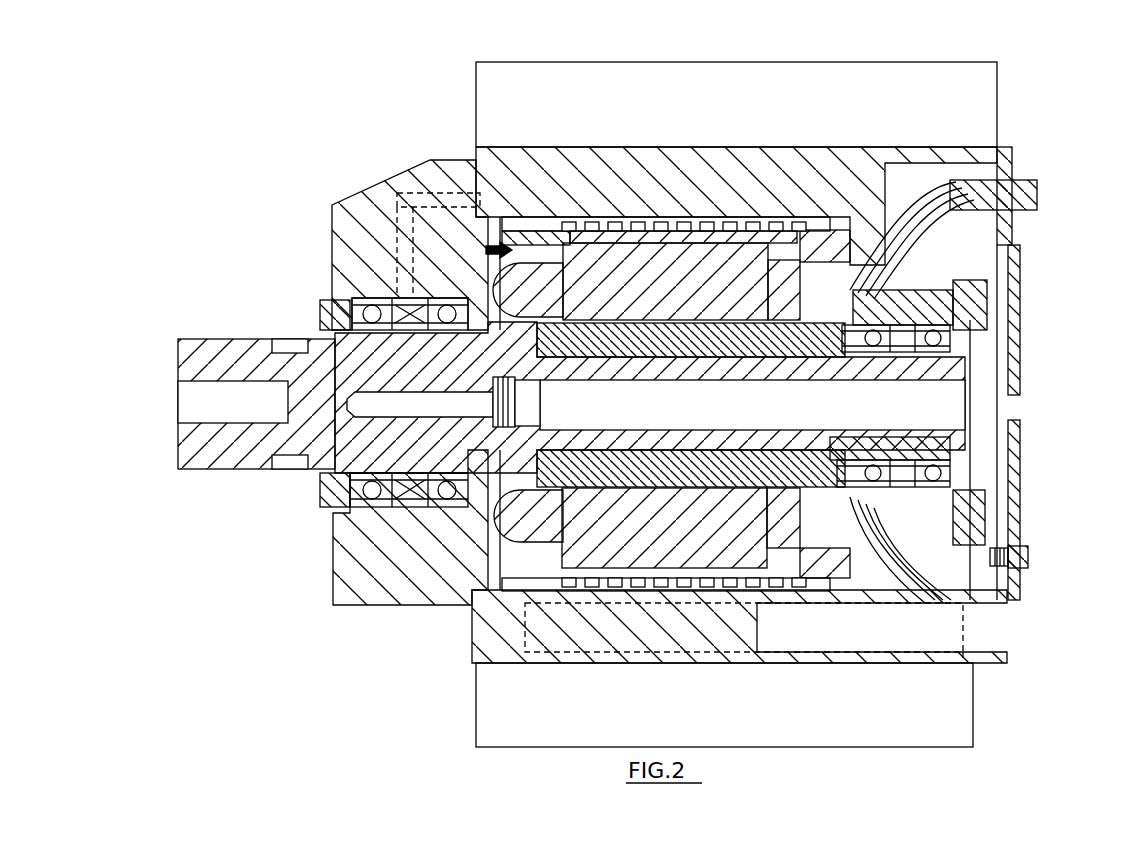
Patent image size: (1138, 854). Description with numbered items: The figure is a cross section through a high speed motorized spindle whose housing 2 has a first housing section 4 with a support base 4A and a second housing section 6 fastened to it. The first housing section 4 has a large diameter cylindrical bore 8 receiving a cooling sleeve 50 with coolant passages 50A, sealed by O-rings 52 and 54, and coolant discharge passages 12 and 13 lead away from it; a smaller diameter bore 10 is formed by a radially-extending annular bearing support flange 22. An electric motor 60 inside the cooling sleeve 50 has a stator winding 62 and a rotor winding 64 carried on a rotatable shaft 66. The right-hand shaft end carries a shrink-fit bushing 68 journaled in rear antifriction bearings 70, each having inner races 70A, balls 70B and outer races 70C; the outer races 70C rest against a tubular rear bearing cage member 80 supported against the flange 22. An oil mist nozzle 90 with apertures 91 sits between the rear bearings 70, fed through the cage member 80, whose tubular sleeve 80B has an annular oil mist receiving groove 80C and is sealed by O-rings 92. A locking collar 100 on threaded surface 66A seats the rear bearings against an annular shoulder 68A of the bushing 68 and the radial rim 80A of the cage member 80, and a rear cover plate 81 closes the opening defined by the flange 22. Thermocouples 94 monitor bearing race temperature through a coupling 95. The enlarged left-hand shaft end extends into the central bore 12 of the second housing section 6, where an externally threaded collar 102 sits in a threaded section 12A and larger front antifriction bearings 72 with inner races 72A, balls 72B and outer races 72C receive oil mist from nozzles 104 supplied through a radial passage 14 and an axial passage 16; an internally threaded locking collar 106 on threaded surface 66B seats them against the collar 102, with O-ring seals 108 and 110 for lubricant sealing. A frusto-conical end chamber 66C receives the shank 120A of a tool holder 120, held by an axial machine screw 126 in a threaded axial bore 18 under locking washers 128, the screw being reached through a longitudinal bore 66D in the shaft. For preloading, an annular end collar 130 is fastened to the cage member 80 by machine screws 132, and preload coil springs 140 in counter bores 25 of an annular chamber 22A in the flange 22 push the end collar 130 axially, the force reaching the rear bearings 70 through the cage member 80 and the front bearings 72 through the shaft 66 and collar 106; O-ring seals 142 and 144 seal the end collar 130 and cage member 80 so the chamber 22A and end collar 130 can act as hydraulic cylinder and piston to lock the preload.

The housing 2 is at (428, 148).
The first housing section 4 is at (480, 640).
The support base 4A is at (614, 78).
The second housing section 6 is at (385, 198).
The large diameter cylindrical bore 8 is at (560, 217).
The smaller diameter cylindrical bore 10 is at (830, 498).
The central bore 12 is at (405, 510).
The threaded section 12A is at (480, 300).
The coolant discharge passage 13 is at (849, 640).
The radial passage 14 is at (490, 252).
The axial passage 16 is at (474, 160).
The threaded axial bore 18 is at (348, 356).
The annular bearing support flange 22 is at (1017, 592).
The annular chamber 22A is at (1012, 232).
The counter bores 25 is at (933, 290).
The cooling sleeve 50 is at (605, 233).
The coolant passages 50A is at (673, 217).
The O-ring 52 is at (515, 217).
The O-ring 54 is at (800, 194).
The electric motor 60 is at (402, 246).
The stator winding 62 is at (515, 583).
The rotor winding 64 is at (642, 347).
The rotatable shaft 66 is at (637, 450).
The threaded surface 66A is at (1037, 341).
The threaded surface 66B is at (322, 344).
The frusto-conical end chamber 66C is at (344, 452).
The longitudinal bore 66D is at (643, 430).
The shrink-fit bushing 68 is at (962, 386).
The annular shoulder 68A is at (840, 388).
The rear antifriction bearings 70 is at (876, 440).
The inner races 70A is at (834, 370).
The balls 70B is at (790, 346).
The outer races 70C is at (790, 477).
The front antifriction bearings 72 is at (362, 290).
The inner races 72A is at (438, 447).
The balls 72B is at (470, 482).
The outer races 72C is at (332, 516).
The rear bearing cage member 80 is at (848, 282).
The radial rim 80A is at (772, 310).
The tubular sleeve 80B is at (933, 603).
The annular oil mist receiving groove 80C is at (914, 538).
The rear cover plate 81 is at (1023, 434).
The oil mist nozzle 90 is at (766, 520).
The apertures 91 is at (920, 450).
The O-rings 92 is at (848, 266).
The thermocouples 94 is at (925, 186).
The coupling 95 is at (1025, 200).
The locking collar 100 is at (1037, 330).
The externally threaded collar 102 is at (472, 335).
The oil mist nozzles 104 is at (405, 332).
The internally threaded locking collar 106 is at (322, 318).
The O-ring seal 108 is at (348, 456).
The O-ring seal 110 is at (434, 550).
The tool holder 120 is at (150, 365).
The shank 120A is at (262, 352).
The axial machine screw 126 is at (420, 404).
The locking washers 128 is at (540, 430).
The annular end collar 130 is at (990, 508).
The machine screws 132 is at (997, 491).
The preload coil springs 140 is at (1023, 200).
The O-ring seal 142 is at (1020, 538).
The O-ring seal 144 is at (987, 484).